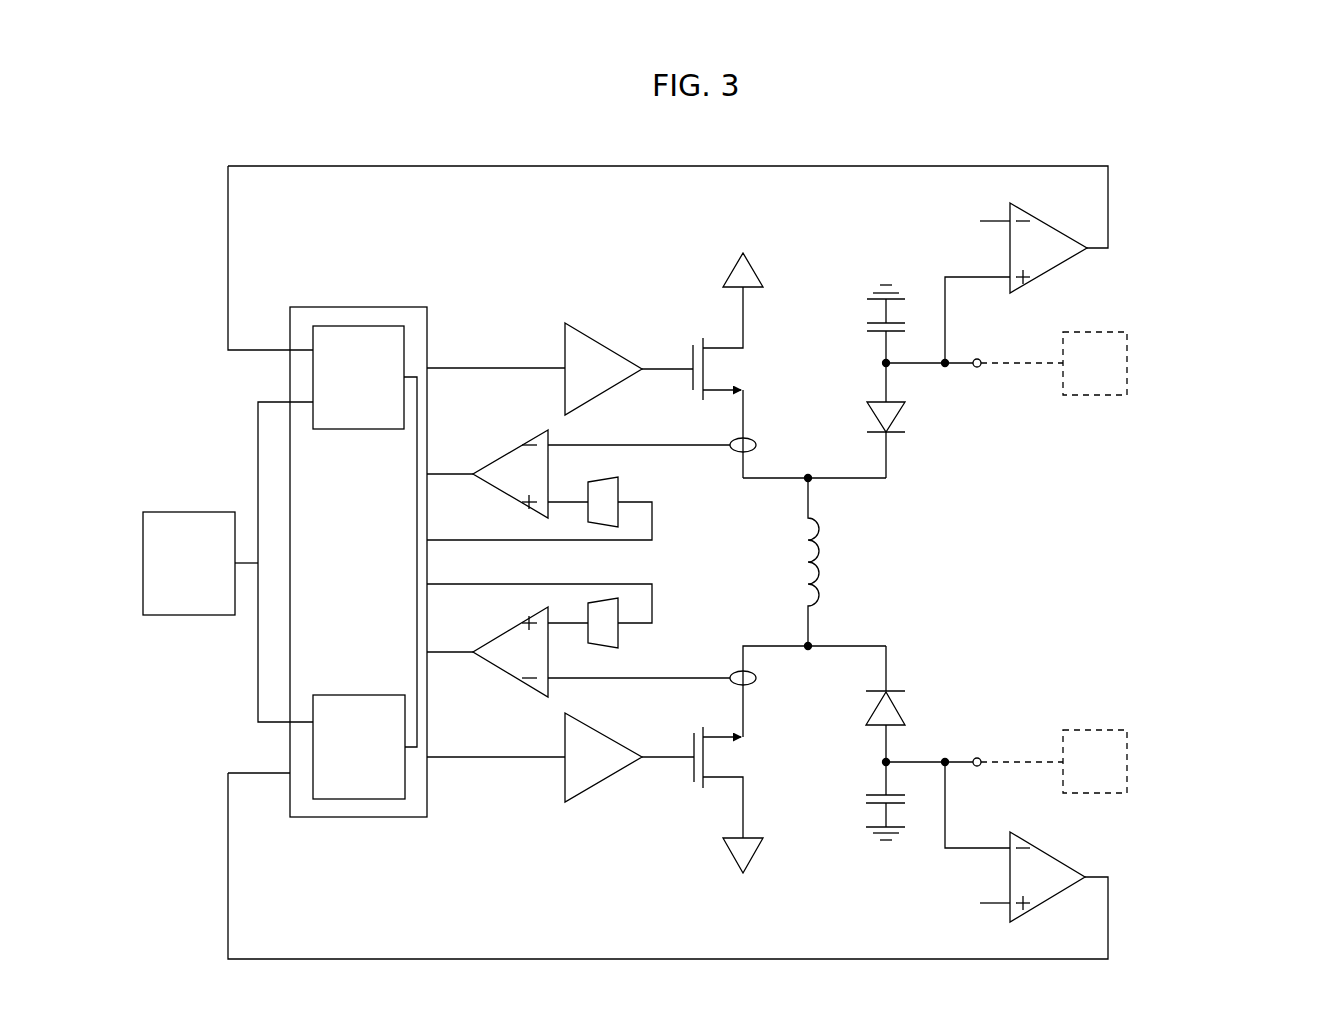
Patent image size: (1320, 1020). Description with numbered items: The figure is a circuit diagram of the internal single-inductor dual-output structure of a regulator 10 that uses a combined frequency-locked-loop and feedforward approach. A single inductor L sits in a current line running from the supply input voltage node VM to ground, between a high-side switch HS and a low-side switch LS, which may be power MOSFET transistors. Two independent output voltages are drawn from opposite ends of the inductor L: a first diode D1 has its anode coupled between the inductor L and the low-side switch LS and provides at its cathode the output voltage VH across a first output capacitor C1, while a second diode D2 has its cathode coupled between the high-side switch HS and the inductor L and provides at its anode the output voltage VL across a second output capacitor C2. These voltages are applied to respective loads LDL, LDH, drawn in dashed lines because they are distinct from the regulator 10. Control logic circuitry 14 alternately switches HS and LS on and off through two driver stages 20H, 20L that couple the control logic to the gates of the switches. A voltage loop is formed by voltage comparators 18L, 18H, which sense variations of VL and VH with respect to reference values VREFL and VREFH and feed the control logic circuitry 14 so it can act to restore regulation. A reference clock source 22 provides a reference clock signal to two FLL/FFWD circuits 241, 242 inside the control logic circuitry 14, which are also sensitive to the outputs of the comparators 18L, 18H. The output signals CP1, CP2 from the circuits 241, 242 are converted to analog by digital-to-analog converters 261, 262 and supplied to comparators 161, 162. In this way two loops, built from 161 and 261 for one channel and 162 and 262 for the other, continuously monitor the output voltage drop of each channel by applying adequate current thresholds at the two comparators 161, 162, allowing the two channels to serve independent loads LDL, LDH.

The single-inductor dual-output (SIDO) regulator 10 is at (1224, 158).
The control logic circuitry 14 is at (298, 750).
The reference clock source 22 is at (178, 604).
The FLL/FFWD circuit 241 is at (358, 340).
The FLL/FFWD circuit 242 is at (353, 783).
The comparator 161 is at (500, 449).
The comparator 162 is at (492, 660).
The digital-to-analog converter 261 is at (605, 490).
The digital-to-analog converter 262 is at (606, 634).
The output signal CP1 is at (533, 542).
The output signal CP2 is at (567, 583).
The driver stage 20H is at (560, 338).
The driver stage 20L is at (566, 762).
The high-side switch HS is at (746, 370).
The low-side switch LS is at (746, 762).
The supply input voltage node VM is at (725, 278).
The inductor L is at (810, 563).
The first output capacitor C1 is at (878, 803).
The second output capacitor C2 is at (870, 322).
The first diode D1 is at (864, 703).
The second diode D2 is at (866, 423).
The output voltage VL is at (941, 349).
The output voltage VH is at (942, 746).
The load LDL is at (1127, 365).
The load LDH is at (1127, 763).
The voltage comparator 18L is at (1057, 262).
The voltage comparator 18H is at (1062, 866).
The reference value VREFL is at (955, 219).
The reference value VREFH is at (955, 909).